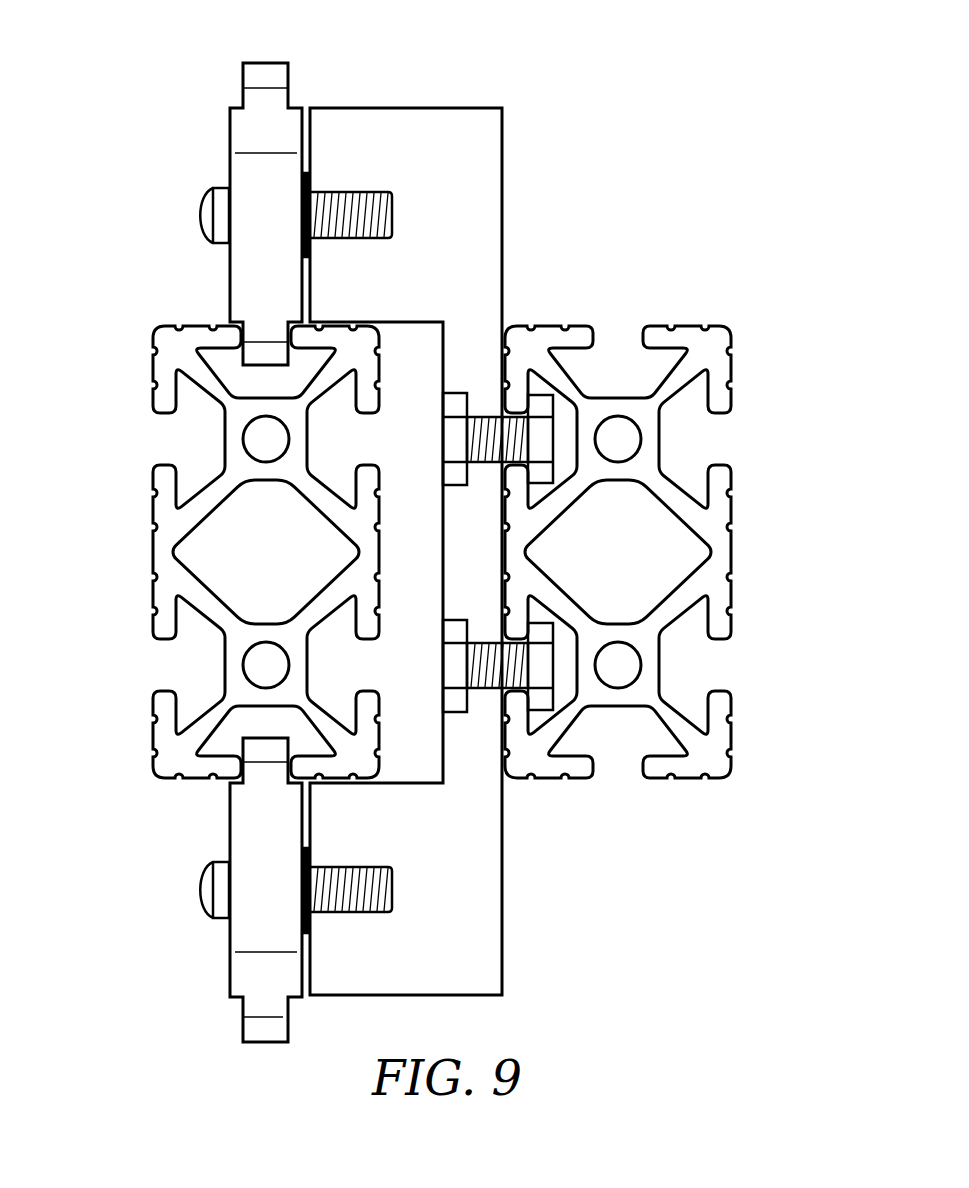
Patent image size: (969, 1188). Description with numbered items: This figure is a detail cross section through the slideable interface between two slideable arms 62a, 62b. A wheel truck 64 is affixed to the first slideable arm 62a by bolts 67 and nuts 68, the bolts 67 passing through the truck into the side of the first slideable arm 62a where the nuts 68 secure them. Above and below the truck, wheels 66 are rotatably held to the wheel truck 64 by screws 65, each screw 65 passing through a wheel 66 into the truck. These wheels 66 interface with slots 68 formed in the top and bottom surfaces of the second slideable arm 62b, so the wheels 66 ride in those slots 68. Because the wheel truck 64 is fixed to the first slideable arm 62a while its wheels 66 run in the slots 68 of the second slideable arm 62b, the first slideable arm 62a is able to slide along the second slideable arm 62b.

The first slideable arm 62a is at (725, 363).
The second slideable arm 62b is at (153, 363).
The wheel truck 64 is at (457, 108).
The screw 65 is at (198, 218).
The wheel 66 is at (230, 133).
The bolt 67 is at (512, 418).
The nut 68 is at (621, 337).